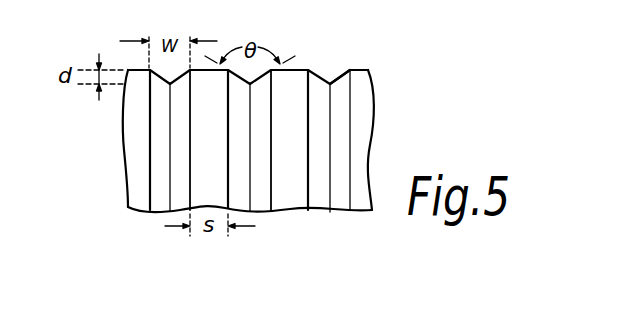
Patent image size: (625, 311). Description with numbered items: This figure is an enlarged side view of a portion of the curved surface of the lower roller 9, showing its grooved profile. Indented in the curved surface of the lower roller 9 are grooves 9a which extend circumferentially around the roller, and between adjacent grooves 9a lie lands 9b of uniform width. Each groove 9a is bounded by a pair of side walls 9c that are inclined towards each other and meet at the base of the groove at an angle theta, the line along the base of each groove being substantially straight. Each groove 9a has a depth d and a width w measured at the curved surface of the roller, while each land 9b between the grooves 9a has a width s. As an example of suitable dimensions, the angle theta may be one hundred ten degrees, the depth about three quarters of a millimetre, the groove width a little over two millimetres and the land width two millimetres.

The lower roller 9 is at (381, 112).
The grooves 9a is at (338, 79).
The lands 9b is at (297, 81).
The side walls 9c is at (243, 193).